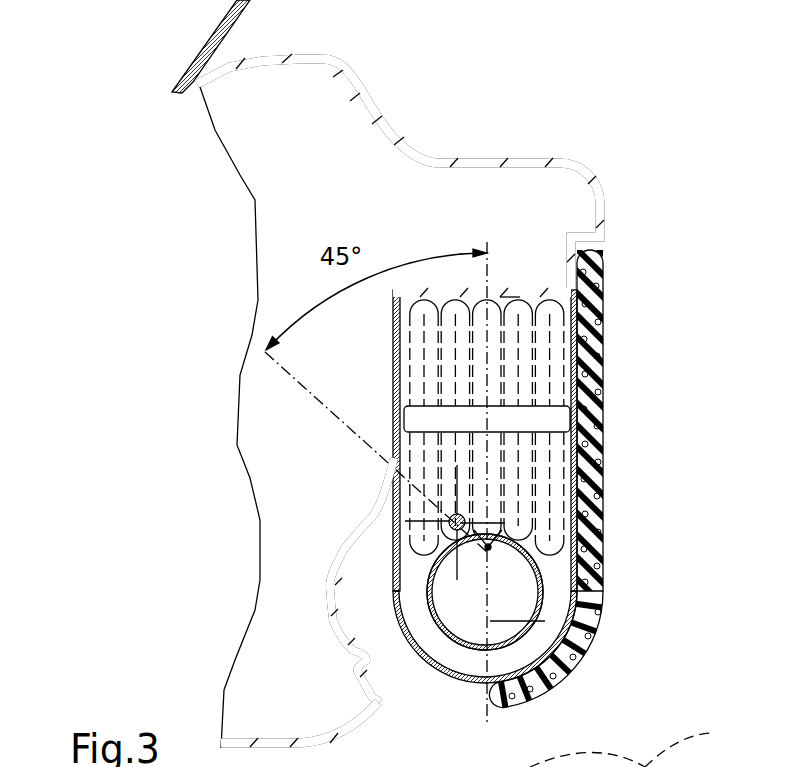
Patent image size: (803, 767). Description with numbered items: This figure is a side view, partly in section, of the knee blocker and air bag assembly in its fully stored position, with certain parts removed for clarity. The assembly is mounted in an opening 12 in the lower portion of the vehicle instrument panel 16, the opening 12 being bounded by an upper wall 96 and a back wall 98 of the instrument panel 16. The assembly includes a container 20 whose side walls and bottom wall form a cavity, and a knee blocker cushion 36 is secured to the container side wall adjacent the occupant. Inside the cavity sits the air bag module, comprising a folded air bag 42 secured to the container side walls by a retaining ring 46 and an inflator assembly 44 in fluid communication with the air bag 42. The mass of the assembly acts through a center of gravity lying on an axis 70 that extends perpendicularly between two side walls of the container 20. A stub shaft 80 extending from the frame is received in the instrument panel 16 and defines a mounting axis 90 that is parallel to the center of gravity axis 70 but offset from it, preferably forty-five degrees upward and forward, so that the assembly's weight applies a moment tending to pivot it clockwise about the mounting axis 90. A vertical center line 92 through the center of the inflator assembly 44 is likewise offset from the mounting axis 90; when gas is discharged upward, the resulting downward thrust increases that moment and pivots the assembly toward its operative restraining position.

The opening 12 is at (388, 656).
The vehicle instrument panel 16 is at (603, 213).
The container 20 is at (396, 340).
The knee blocker cushion 36 is at (602, 382).
The air bag 42 is at (518, 307).
The inflator assembly 44 is at (545, 597).
The retaining ring 46 is at (552, 418).
The center of gravity axis 70 is at (489, 546).
The stub shaft 80 is at (449, 521).
The mounting axis 90 is at (583, 508).
The vertical center line 92 is at (545, 621).
The upper wall 96 is at (510, 288).
The back wall 98 is at (400, 421).